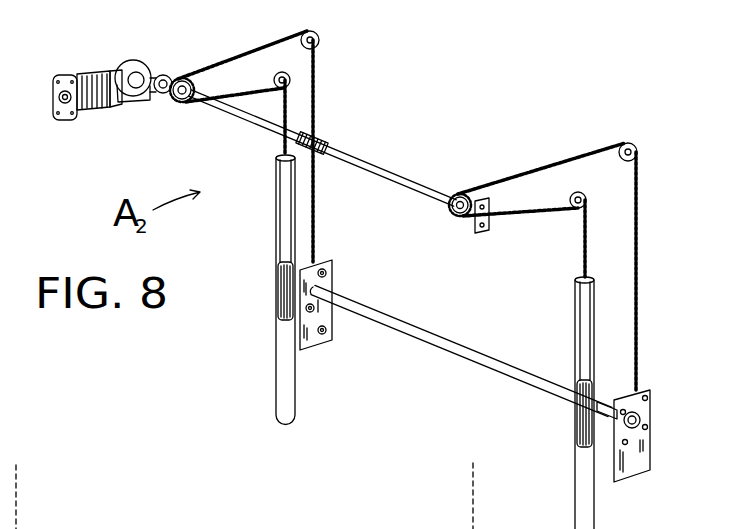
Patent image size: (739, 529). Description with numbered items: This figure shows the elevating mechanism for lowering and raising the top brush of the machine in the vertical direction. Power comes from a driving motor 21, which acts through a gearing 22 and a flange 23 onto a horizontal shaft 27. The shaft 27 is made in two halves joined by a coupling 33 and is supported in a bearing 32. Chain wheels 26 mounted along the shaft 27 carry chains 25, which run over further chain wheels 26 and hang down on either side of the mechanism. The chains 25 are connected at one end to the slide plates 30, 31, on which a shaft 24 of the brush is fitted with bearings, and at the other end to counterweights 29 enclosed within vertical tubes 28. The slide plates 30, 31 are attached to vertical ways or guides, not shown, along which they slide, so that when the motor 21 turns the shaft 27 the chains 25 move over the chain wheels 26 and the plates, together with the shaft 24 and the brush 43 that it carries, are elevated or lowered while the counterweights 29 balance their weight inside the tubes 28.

The driving motor 21 is at (87, 73).
The gearing 22 is at (133, 57).
The flange 23 is at (167, 67).
The shaft of the brush 24 is at (182, 100).
The chains 25 is at (242, 53).
The chain wheels 26 is at (290, 77).
The shaft 27 is at (388, 158).
The tubes 28 is at (280, 368).
The counterweights 29 is at (280, 290).
The slide plate 30 is at (317, 340).
The slide plate 31 is at (640, 477).
The bearing 32 is at (490, 223).
The coupling 33 is at (320, 138).
The brush 43 is at (183, 528).